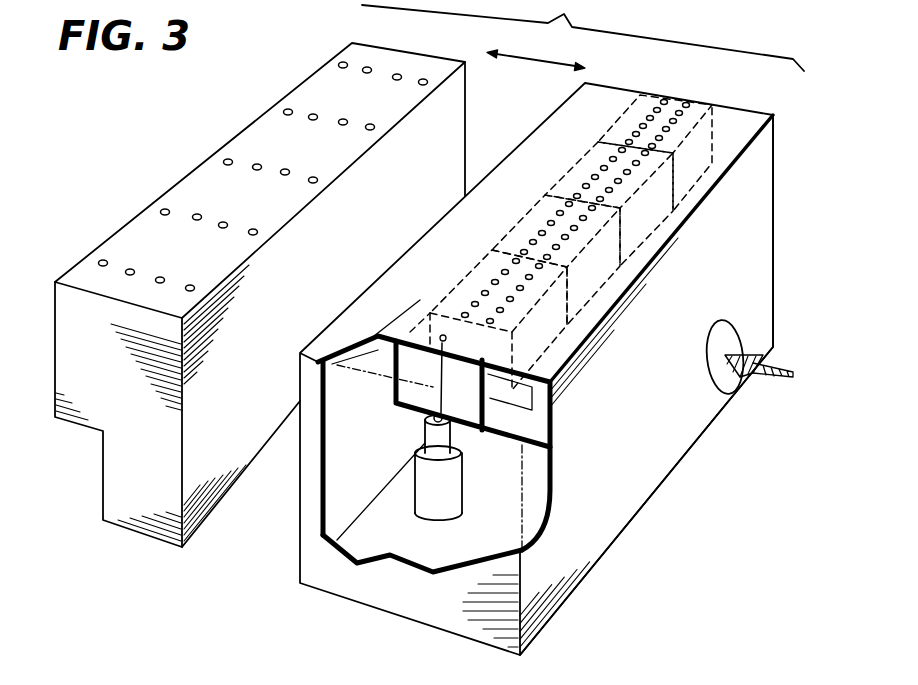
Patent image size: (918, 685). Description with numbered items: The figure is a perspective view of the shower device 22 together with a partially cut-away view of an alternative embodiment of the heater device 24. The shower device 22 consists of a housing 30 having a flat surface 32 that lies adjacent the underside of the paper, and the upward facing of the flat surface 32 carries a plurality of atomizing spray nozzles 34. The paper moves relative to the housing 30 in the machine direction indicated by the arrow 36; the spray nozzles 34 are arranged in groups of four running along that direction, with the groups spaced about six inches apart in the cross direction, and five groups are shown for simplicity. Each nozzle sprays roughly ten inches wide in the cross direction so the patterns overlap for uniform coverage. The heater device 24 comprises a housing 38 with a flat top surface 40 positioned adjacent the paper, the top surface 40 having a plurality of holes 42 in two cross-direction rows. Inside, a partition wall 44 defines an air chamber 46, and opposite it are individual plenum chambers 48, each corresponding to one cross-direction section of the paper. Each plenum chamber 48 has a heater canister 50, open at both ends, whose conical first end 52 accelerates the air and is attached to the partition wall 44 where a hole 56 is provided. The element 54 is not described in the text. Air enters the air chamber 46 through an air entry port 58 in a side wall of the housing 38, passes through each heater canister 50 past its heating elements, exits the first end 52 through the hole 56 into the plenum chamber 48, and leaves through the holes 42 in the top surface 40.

The shower device 22 is at (326, 50).
The heater device 24 is at (727, 92).
The housing 30 is at (62, 338).
The flat surface 32 is at (123, 232).
The atomizing spray nozzles 34 is at (166, 208).
The arrow 36 is at (529, 62).
The housing 38 is at (635, 493).
The flat top surface 40 is at (657, 233).
The holes 42 is at (616, 150).
The partition wall 44 is at (345, 405).
The air chamber 46 is at (488, 535).
The plenum chambers 48 is at (403, 342).
The heater canister 50 is at (448, 491).
The first end 52 is at (443, 337).
The base 54 is at (438, 524).
The hole 56 is at (430, 410).
The air entry port 58 is at (705, 390).